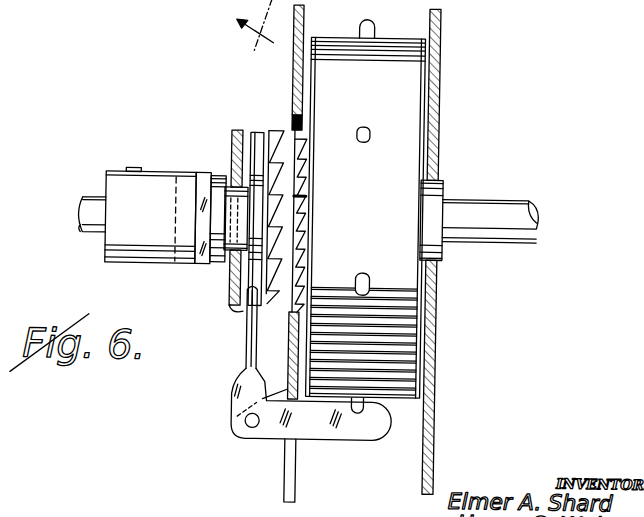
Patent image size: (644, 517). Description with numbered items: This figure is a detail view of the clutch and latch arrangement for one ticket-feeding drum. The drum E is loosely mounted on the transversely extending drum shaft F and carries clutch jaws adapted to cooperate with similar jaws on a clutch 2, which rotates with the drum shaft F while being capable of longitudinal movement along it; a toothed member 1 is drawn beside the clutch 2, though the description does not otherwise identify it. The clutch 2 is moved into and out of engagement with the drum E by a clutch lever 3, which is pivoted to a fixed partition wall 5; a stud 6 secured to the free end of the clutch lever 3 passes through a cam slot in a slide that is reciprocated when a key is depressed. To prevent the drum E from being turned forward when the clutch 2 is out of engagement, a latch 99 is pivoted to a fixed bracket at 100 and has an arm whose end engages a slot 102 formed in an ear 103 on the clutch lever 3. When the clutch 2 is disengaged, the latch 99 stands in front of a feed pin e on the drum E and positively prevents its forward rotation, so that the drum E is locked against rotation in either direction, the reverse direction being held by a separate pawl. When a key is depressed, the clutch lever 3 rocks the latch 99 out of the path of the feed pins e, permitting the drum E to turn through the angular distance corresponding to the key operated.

The ratchet wheel 1 is at (302, 184).
The clutch 2 is at (266, 201).
The clutch lever 3 is at (239, 201).
The fixed partition wall 5 is at (291, 73).
The stud 6 is at (255, 37).
The latch 99 is at (366, 438).
The pivot 100 is at (248, 424).
The slot 102 is at (240, 316).
The ear 103 is at (268, 327).
The drum E is at (366, 217).
The drum shaft F is at (97, 236).
The feed pin e is at (371, 30).